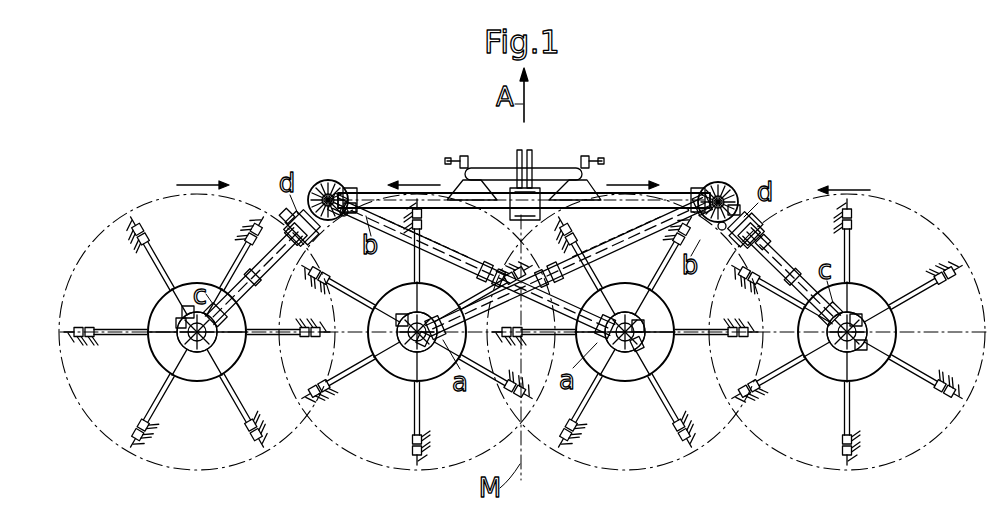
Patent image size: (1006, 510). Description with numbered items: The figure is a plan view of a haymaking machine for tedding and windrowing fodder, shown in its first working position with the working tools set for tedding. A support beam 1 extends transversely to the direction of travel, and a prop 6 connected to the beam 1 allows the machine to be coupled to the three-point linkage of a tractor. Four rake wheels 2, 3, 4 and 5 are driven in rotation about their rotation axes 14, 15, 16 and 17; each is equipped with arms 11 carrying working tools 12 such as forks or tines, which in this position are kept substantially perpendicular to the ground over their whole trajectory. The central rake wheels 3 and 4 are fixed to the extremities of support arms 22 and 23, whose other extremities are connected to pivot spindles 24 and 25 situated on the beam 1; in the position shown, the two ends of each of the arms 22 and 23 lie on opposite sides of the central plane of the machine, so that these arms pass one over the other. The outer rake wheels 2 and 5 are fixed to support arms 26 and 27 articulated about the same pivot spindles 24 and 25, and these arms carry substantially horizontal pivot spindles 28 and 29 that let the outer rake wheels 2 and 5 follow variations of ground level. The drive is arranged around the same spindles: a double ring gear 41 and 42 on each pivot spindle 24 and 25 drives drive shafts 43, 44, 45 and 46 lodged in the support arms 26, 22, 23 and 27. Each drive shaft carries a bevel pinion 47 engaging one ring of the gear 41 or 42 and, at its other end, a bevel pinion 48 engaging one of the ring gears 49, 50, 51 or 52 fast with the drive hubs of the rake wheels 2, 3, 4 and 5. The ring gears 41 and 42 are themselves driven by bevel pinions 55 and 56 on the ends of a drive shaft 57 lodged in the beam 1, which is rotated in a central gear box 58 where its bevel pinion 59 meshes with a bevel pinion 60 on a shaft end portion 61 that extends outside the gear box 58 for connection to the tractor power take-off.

The support beam 1 is at (672, 197).
The rake wheel 2 is at (106, 416).
The rake wheel 3 is at (356, 432).
The rake wheel 4 is at (551, 441).
The rake wheel 5 is at (780, 432).
The prop 6 is at (488, 170).
The arms 11 is at (97, 327).
The working tools 12 is at (127, 222).
The rotation axis 14 is at (187, 337).
The rotation axis 15 is at (410, 345).
The rotation axis 16 is at (630, 363).
The rotation axis 17 is at (850, 353).
The support arm 22 is at (458, 257).
The support arm 23 is at (590, 254).
The pivot spindle 24 is at (326, 180).
The pivot spindle 25 is at (716, 182).
The support arm 26 is at (286, 214).
The support arm 27 is at (764, 236).
The horizontal pivot spindle 28 is at (305, 208).
The horizontal pivot spindle 29 is at (750, 222).
The double ring gear 41 is at (349, 202).
The double ring gear 42 is at (735, 206).
The drive shaft 43 is at (232, 280).
The drive shaft 44 is at (400, 245).
The drive shaft 45 is at (626, 246).
The drive shaft 46 is at (797, 273).
The bevel pinion 47 is at (343, 216).
The bevel pinion 48 is at (186, 312).
The ring gear 49 is at (182, 323).
The ring gear 50 is at (423, 341).
The ring gear 51 is at (640, 347).
The ring gear 52 is at (866, 347).
The bevel pinion 55 is at (352, 192).
The bevel pinion 56 is at (696, 188).
The drive shaft 57 is at (630, 198).
The central gear box 58 is at (543, 188).
The bevel pinion 59 is at (513, 190).
The bevel pinion 60 is at (518, 186).
The shaft end portion 61 is at (531, 184).